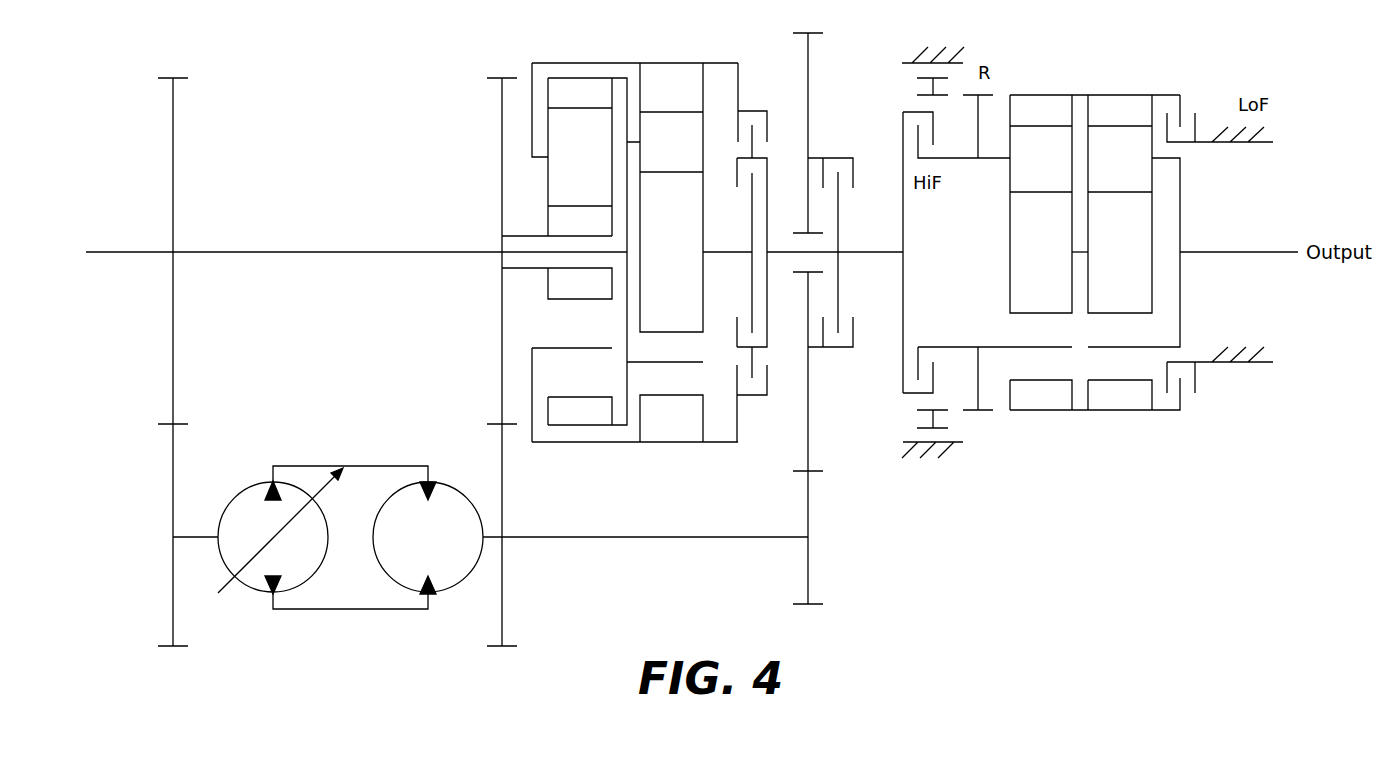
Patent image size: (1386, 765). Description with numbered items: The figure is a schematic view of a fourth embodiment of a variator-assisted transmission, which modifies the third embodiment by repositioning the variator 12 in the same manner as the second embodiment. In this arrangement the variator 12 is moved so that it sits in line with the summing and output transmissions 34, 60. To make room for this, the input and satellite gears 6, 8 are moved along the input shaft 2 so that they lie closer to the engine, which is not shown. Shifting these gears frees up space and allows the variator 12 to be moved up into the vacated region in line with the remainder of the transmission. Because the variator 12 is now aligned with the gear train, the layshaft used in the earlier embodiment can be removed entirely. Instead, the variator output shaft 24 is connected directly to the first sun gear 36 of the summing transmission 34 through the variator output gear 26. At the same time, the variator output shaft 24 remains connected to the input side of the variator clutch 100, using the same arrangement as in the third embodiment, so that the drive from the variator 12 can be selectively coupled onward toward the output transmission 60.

The input shaft 2 is at (120, 255).
The input gear 6 is at (173, 147).
The satellite gear 8 is at (173, 488).
The variator 12 is at (331, 619).
The variator output shaft 24 is at (674, 540).
The variator output gear 26 is at (502, 593).
The summing transmission 34 is at (628, 58).
The first sun gear 36 is at (548, 284).
The output transmission 60 is at (1078, 92).
The variator clutch 100 is at (843, 348).